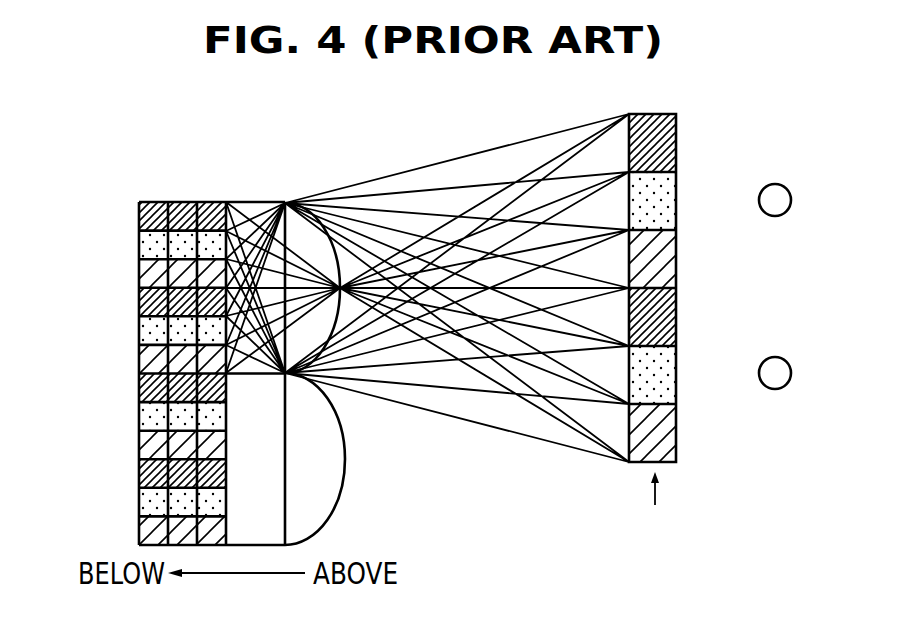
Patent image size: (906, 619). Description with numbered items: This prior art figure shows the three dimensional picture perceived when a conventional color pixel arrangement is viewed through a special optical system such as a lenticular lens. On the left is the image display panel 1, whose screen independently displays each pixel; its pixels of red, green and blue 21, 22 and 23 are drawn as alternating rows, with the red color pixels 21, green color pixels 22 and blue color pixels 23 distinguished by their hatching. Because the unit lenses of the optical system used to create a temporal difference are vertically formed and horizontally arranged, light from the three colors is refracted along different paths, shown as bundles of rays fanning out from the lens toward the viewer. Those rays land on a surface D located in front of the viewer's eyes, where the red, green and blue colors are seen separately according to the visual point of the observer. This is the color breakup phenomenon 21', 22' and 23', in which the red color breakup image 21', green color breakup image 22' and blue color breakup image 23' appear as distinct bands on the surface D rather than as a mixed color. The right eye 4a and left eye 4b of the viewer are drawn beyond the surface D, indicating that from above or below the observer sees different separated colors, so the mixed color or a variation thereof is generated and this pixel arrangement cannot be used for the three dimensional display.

The image display panel 1 is at (195, 183).
The red color pixels 21 is at (123, 345).
The green color pixels 22 is at (123, 374).
The blue color pixels 23 is at (123, 402).
The red color breakup image 21' is at (699, 230).
The green color breakup image 22' is at (725, 288).
The blue color breakup image 23' is at (710, 346).
The right eye 4a is at (791, 200).
The left eye 4b is at (791, 373).
The surface D is at (657, 505).